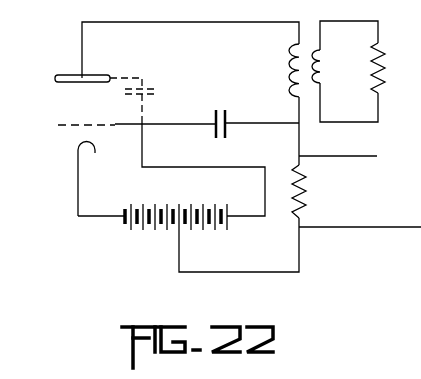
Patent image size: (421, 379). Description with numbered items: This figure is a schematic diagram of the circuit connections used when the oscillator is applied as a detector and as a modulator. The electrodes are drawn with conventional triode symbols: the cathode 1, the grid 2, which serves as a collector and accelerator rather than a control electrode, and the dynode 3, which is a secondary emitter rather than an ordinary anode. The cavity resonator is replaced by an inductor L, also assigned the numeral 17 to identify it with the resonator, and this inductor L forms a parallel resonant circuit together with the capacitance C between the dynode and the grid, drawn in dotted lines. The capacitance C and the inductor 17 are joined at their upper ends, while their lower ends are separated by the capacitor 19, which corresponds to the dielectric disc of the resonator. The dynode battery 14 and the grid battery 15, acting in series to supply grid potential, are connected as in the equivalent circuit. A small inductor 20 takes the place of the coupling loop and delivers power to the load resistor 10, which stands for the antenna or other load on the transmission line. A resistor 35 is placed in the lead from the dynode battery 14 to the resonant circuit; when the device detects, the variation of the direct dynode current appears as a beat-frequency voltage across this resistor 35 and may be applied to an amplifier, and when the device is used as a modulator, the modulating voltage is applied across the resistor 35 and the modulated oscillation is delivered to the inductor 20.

The cathode 1 is at (77, 142).
The grid 2 is at (58, 125).
The dynode 3 is at (55, 78).
The capacitance C is at (152, 93).
The capacitor 19 is at (227, 118).
The inductor 17 is at (293, 60).
The inductor L is at (290, 90).
The inductor 20 is at (323, 72).
The load resistor 10 is at (391, 68).
The resistor 35 is at (304, 199).
The dynode battery 14 is at (137, 236).
The grid battery 15 is at (197, 236).